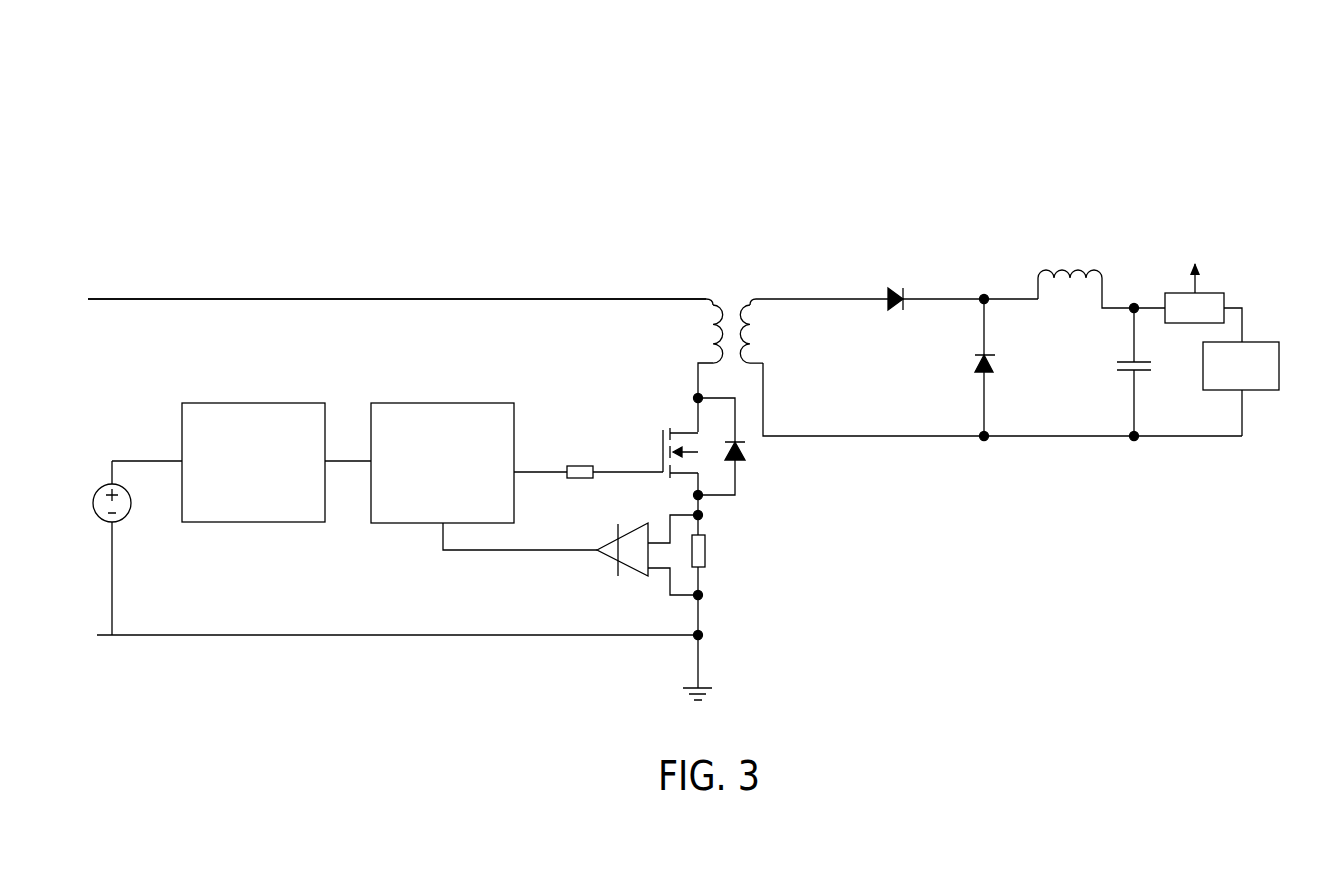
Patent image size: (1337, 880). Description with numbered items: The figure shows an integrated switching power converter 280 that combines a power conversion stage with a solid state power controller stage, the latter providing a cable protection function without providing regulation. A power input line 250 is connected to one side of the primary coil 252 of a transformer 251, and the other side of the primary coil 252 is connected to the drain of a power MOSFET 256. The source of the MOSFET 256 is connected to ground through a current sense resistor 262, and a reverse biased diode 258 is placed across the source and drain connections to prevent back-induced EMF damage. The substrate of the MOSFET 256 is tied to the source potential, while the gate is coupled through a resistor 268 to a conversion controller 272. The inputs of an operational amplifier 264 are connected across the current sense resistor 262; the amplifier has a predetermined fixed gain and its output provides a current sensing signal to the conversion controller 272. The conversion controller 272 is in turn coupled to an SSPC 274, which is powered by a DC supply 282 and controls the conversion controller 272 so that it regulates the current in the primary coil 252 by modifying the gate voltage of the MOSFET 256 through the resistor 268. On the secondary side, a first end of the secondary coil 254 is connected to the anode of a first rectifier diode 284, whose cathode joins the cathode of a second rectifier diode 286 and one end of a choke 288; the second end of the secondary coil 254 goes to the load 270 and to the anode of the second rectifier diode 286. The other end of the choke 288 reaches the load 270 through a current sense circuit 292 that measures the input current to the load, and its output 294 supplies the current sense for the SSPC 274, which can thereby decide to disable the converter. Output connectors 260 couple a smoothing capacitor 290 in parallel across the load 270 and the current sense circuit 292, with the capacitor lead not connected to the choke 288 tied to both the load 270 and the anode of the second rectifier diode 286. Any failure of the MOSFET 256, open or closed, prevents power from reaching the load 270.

The integrated switching power converter 280 is at (162, 150).
The power input line 250 is at (191, 299).
The DC supply 282 is at (88, 515).
The SSPC 274 is at (250, 403).
The conversion controller 272 is at (443, 403).
The output 294 is at (237, 573).
The resistor 268 is at (577, 487).
The power MOSFET 256 is at (647, 440).
The reverse biased diode 258 is at (752, 452).
The current sense resistor 262 is at (718, 553).
The operational amplifier 264 is at (603, 568).
The transformer 251 is at (729, 284).
The primary coil 252 is at (705, 328).
The secondary coil 254 is at (755, 333).
The first rectifier diode 284 is at (893, 275).
The second rectifier diode 286 is at (958, 368).
The choke 288 is at (1070, 265).
The smoothing capacitor 290 is at (1118, 378).
The current sense circuit 292 is at (1224, 295).
The load 270 is at (1258, 392).
The output connectors 260 is at (1167, 485).